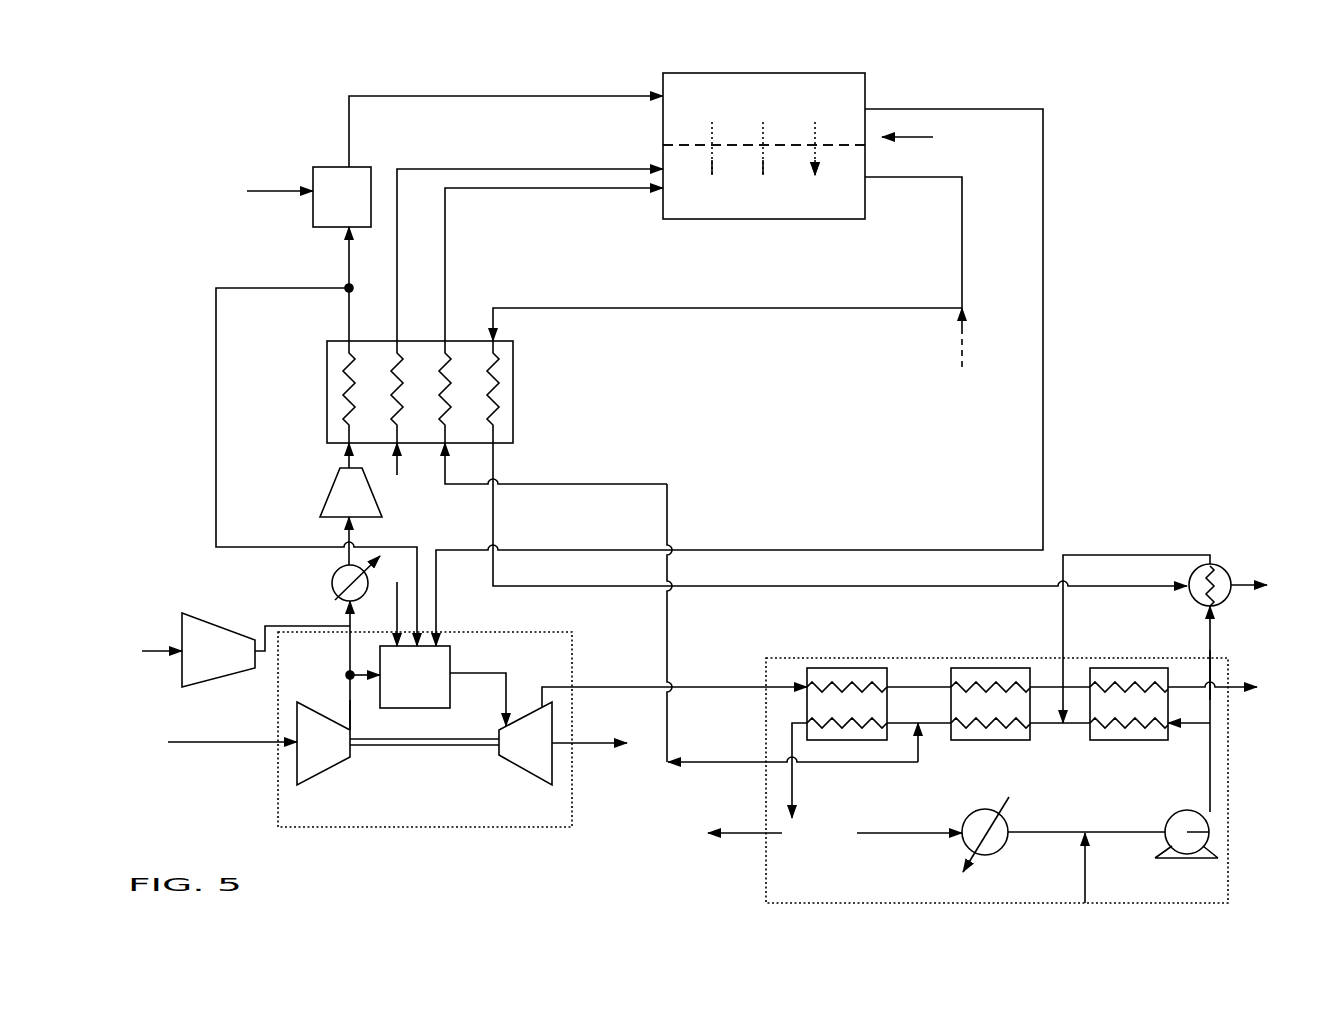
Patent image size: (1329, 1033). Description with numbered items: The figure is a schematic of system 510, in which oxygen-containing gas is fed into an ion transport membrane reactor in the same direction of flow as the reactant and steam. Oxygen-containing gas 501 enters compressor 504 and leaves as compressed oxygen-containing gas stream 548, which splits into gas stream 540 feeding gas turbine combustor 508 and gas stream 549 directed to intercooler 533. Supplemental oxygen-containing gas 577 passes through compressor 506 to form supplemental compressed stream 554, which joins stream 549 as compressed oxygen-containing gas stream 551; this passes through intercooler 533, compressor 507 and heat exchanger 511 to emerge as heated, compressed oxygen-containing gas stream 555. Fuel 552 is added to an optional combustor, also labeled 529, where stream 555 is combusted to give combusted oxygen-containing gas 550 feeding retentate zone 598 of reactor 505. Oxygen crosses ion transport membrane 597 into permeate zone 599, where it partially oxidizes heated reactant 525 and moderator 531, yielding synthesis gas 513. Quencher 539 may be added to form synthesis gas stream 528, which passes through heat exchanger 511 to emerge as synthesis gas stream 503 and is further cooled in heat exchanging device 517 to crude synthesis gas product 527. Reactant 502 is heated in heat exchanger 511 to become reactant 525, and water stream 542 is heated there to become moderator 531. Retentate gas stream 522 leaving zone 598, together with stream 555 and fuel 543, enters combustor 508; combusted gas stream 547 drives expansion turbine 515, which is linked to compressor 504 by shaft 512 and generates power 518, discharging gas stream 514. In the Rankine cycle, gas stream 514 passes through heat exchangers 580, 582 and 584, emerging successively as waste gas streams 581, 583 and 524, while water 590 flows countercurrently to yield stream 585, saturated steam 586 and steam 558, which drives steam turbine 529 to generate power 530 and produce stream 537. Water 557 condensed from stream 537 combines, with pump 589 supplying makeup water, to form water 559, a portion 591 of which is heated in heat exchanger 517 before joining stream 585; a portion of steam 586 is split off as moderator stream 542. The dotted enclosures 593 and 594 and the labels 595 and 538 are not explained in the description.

The oxygen-containing gas 501 is at (213, 744).
The reactant 502 is at (397, 472).
The synthesis gas stream 503 is at (765, 586).
The compressor 504 is at (323, 743).
The reactor 505 is at (930, 137).
The compressor 506 is at (218, 650).
The compressor 507 is at (351, 504).
The gas turbine combustor 508 is at (415, 677).
The system 510 is at (1068, 118).
The heat exchanger 511 is at (327, 380).
The shaft 512 is at (410, 752).
The synthesis gas 513 is at (885, 180).
The gas stream 514 is at (598, 687).
The expansion turbine 515 is at (525, 743).
The heat exchanging device 517 is at (1228, 596).
The power 518 is at (582, 744).
The compressed, combusted oxygen-depleted retentate gas stream 522 is at (1043, 232).
The cooler waste gas stream 524 is at (1228, 690).
The heated reactant 525 is at (545, 169).
The crude synthesis gas product 527 is at (1248, 576).
The synthesis gas stream 528 is at (855, 308).
The steam turbine 529 is at (313, 226).
The power 530 is at (751, 832).
The moderator 531 is at (545, 190).
The intercooler 533 is at (330, 577).
The stream 537 is at (880, 833).
The valve 538 is at (995, 855).
The quencher 539 is at (962, 348).
The gas stream 540 is at (350, 678).
The water stream 542 is at (574, 484).
The fuel 543 is at (364, 605).
The combusted oxygen-containing gas stream 547 is at (484, 673).
The compressed oxygen-containing gas stream 548 is at (350, 716).
The gas stream 549 is at (350, 640).
The combusted oxygen-containing gas 550 is at (566, 96).
The compressed oxygen-containing gas stream 551 is at (344, 620).
The fuel 552 is at (270, 191).
The supplemental compressed oxygen-containing gas stream 554 is at (265, 626).
The heated, compressed oxygen-containing gas stream 555 is at (348, 315).
The water 557 is at (1044, 833).
The steam 558 is at (792, 744).
The water 559 is at (1115, 555).
The supplemental oxygen-containing gas 577 is at (165, 650).
The heat exchanger 580 is at (847, 704).
The waste gas stream 581 is at (892, 687).
The heat exchanger 582 is at (990, 704).
The waste gas stream 583 is at (1072, 688).
The heat exchanger 584 is at (1129, 704).
The stream 585 is at (1036, 726).
The saturated steam 586 is at (890, 723).
The pump 589 is at (1187, 860).
The water 590 is at (1192, 740).
The portion 591 is at (1218, 646).
The gas turbine unit 593 is at (374, 827).
The heat recovery unit 594 is at (858, 903).
The stream 595 is at (216, 455).
The ion transport membrane 597 is at (783, 140).
The retentate zone 598 is at (764, 146).
The permeate zone 599 is at (764, 180).